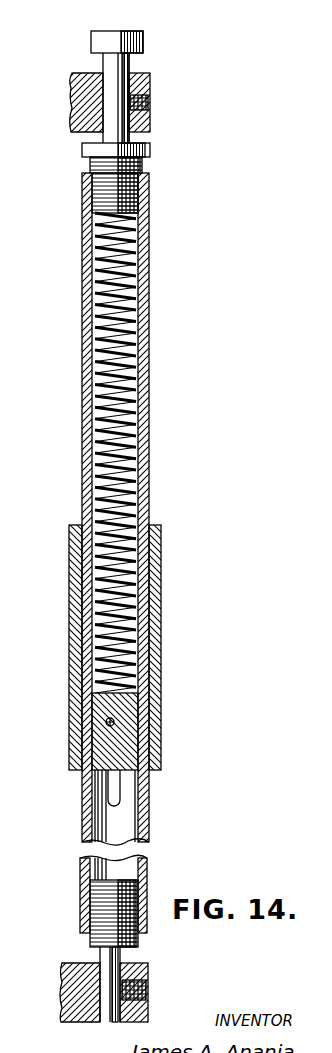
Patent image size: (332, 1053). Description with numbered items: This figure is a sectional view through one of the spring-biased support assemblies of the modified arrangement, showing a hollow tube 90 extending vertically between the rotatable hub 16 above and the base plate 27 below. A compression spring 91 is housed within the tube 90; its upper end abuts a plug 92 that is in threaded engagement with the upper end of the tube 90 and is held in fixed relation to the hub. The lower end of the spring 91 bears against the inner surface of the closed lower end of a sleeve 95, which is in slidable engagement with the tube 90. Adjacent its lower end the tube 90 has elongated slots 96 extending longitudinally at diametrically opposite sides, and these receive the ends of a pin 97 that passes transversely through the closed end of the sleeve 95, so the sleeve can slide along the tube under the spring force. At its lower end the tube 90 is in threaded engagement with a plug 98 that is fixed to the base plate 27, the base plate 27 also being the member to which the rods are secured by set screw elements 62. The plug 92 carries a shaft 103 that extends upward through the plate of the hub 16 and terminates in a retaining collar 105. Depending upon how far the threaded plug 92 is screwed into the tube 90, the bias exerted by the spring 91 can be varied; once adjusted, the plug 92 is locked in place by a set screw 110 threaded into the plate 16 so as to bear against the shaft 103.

The retaining collar 105 is at (128, 42).
The shaft 103 is at (112, 65).
The rotatable hub 16 is at (143, 82).
The set screw 110 is at (150, 102).
The plug 92 is at (140, 160).
The hollow tube 90 is at (143, 388).
The compression spring 91 is at (137, 303).
The sleeve 95 is at (158, 587).
The pin 97 is at (114, 722).
The elongated slots 96 is at (107, 793).
The plug 98 is at (139, 940).
The base plate 27 is at (73, 968).
The set screw elements 62 is at (148, 988).